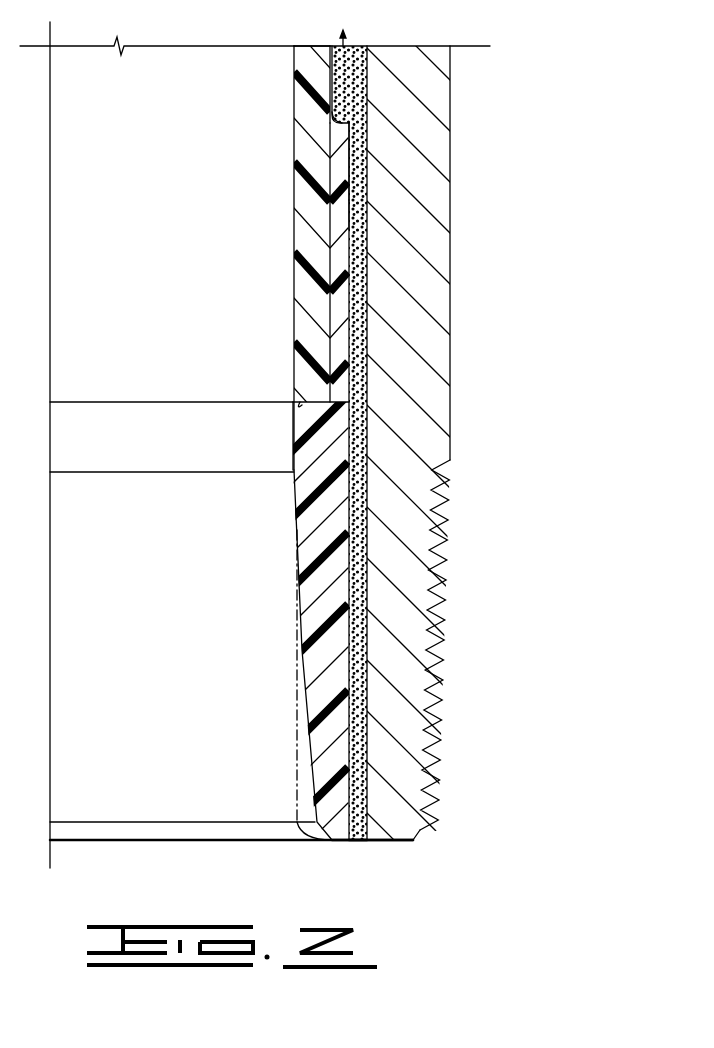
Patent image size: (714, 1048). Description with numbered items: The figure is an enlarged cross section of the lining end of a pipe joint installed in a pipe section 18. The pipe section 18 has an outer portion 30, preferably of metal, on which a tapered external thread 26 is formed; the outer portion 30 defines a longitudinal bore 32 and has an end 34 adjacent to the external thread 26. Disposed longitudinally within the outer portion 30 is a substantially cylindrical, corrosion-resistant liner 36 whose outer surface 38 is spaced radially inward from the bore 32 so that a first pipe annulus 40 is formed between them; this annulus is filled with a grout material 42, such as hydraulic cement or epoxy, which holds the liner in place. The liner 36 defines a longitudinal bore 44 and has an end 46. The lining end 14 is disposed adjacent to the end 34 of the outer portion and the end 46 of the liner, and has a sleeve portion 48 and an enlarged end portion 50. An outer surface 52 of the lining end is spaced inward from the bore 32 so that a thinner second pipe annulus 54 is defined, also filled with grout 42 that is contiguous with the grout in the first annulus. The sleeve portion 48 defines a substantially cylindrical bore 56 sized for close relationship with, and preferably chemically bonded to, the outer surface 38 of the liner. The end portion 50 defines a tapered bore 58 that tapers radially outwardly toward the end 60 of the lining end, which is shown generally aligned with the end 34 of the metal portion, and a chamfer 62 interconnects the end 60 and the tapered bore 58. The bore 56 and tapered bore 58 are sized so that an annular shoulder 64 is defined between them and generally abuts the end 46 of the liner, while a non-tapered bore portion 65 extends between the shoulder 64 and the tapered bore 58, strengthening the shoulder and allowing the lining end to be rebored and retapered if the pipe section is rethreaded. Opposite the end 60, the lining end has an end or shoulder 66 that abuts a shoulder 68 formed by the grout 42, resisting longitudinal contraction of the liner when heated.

The lining end 14 is at (377, 452).
The pipe section 18 is at (556, 250).
The external thread 26 is at (433, 677).
The outer portion 30 is at (425, 120).
The longitudinal bore 32 is at (367, 175).
The end 34 is at (403, 842).
The liner 36 is at (315, 165).
The outer surface 38 is at (333, 63).
The first pipe annulus 40 is at (370, 82).
The grout material 42 is at (349, 443).
The longitudinal bore 44 is at (296, 210).
The end 46 is at (302, 405).
The sleeve portion 48 is at (340, 283).
The enlarged end portion 50 is at (320, 548).
The outer surface 52 is at (370, 343).
The second pipe annulus 54 is at (367, 217).
The cylindrical bore 56 is at (327, 305).
The tapered bore 58 is at (295, 640).
The end 60 is at (337, 842).
The chamfer 62 is at (298, 823).
The annular shoulder 64 is at (317, 397).
The non-tapered bore portion 65 is at (293, 462).
The end or shoulder 66 is at (334, 100).
The shoulder 68 is at (346, 126).